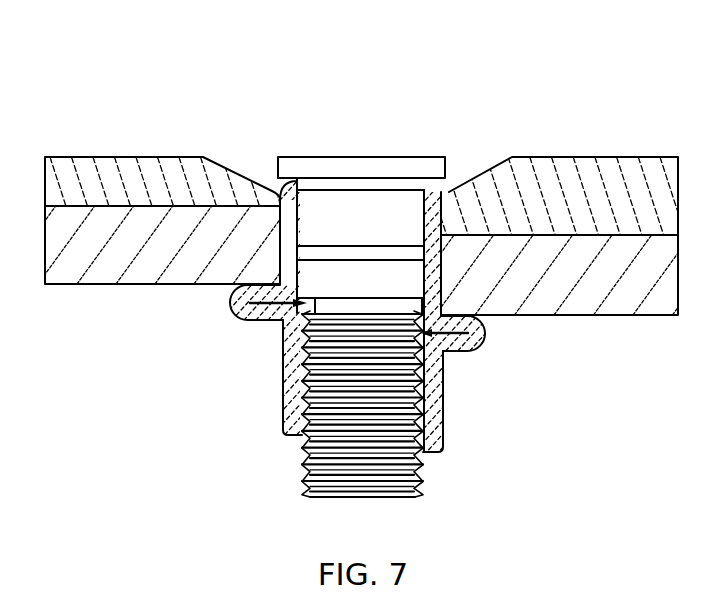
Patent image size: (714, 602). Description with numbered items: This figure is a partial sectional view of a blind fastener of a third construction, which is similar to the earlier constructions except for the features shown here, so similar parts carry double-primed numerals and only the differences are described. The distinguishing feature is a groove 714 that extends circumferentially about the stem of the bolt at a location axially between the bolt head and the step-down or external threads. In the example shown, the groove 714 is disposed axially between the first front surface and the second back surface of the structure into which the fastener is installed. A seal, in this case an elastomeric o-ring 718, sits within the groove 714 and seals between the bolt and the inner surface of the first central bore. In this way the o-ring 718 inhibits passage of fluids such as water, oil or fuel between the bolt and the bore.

The groove 714 is at (329, 246).
The elastomeric o-ring 718 is at (397, 250).